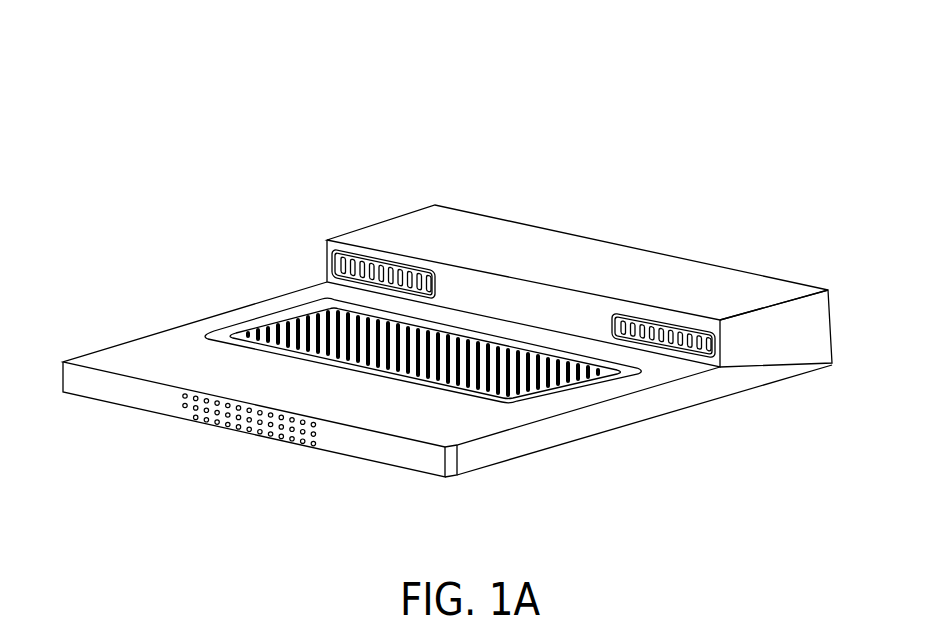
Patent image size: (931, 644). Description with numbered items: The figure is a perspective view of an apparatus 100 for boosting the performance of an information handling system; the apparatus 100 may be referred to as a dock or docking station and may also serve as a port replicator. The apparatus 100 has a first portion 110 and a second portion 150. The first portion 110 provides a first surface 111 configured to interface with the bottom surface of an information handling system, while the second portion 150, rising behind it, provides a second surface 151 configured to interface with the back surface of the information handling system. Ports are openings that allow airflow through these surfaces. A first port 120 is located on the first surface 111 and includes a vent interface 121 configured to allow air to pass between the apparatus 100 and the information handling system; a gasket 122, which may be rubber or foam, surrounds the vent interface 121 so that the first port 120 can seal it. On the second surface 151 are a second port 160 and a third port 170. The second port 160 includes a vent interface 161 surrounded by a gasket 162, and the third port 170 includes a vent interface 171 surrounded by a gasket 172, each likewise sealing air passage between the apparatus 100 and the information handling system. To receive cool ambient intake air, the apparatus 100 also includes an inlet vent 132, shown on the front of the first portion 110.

The apparatus 100 is at (100, 101).
The first portion 110 is at (720, 424).
The first surface 111 is at (132, 346).
The first port 120 is at (290, 335).
The vent interface 121 is at (322, 343).
The gasket 122 is at (222, 337).
The inlet vent 132 is at (270, 437).
The second portion 150 is at (833, 388).
The second surface 151 is at (522, 310).
The second port 160 is at (350, 239).
The vent interface 161 is at (413, 272).
The gasket 162 is at (326, 257).
The third port 170 is at (671, 303).
The vent interface 171 is at (632, 313).
The gasket 172 is at (704, 330).